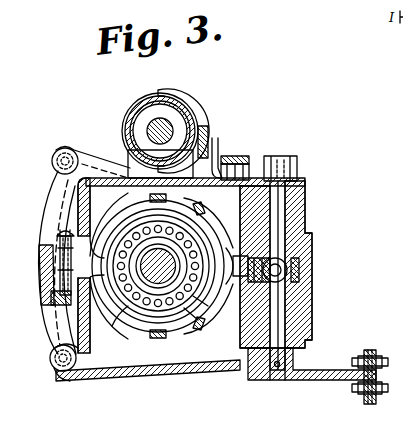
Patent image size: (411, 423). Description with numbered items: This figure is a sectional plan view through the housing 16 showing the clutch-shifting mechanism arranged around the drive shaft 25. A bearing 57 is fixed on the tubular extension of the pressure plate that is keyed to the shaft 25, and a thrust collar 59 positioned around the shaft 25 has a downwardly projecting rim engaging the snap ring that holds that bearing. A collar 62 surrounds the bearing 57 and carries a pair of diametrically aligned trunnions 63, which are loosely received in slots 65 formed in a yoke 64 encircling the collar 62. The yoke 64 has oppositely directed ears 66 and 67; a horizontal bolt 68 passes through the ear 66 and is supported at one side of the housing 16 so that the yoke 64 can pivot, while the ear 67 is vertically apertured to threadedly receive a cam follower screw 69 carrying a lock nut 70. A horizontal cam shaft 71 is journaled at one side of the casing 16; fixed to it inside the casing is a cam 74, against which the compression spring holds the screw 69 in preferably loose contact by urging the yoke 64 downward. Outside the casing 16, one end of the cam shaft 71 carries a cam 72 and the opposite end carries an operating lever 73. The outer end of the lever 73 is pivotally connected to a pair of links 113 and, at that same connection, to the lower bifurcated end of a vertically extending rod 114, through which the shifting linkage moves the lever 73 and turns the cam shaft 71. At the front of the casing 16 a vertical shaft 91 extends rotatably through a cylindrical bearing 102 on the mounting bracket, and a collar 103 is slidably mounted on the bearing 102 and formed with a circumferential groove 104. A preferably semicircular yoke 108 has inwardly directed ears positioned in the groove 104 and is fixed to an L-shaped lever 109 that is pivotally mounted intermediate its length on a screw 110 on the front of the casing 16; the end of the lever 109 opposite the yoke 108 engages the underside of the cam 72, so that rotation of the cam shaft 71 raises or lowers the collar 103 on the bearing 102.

The housing 16 is at (125, 378).
The drive shaft 25 is at (147, 241).
The bearing 57 is at (120, 320).
The thrust collar 59 is at (170, 235).
The collar 62 is at (192, 297).
The trunnions 63 is at (160, 189).
The yoke 64 is at (116, 196).
The slots 65 is at (204, 266).
The ear 66 is at (52, 251).
The ear 67 is at (228, 275).
The horizontal bolt 68 is at (52, 225).
The cam follower screw 69 is at (291, 259).
The lock nut 70 is at (280, 251).
The cam shaft 71 is at (279, 202).
The cam 72 is at (291, 155).
The operating lever 73 is at (300, 372).
The cam 74 is at (240, 255).
The vertical shaft 91 is at (150, 117).
The bearing 102 is at (142, 97).
The collar 103 is at (122, 127).
The circumferential groove 104 is at (134, 103).
The yoke 108 is at (180, 83).
The lever 109 is at (212, 138).
The screw 110 is at (236, 136).
The links 113 is at (370, 366).
The rod 114 is at (376, 354).